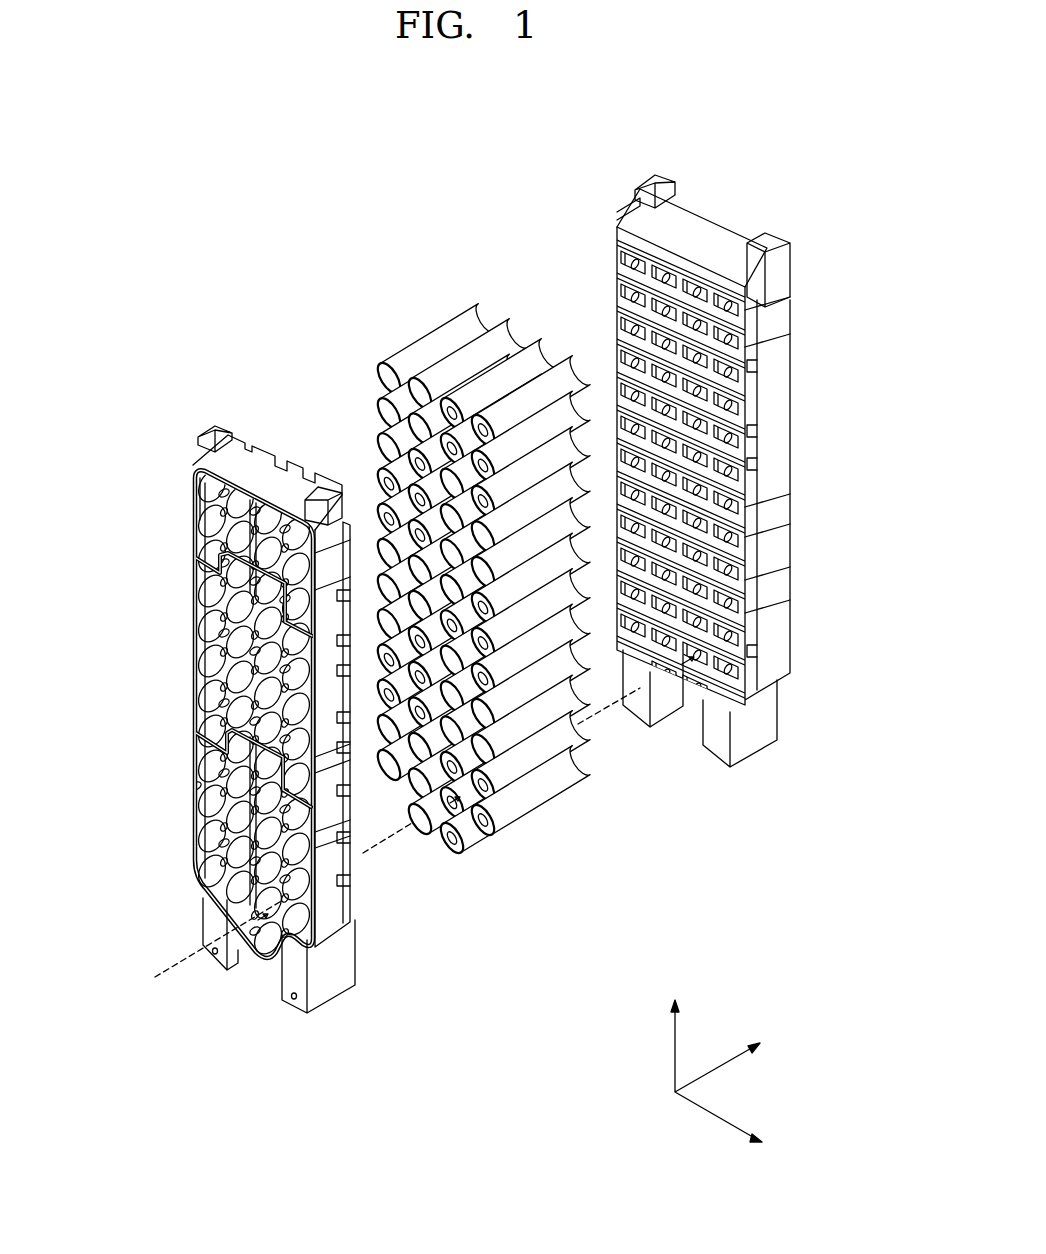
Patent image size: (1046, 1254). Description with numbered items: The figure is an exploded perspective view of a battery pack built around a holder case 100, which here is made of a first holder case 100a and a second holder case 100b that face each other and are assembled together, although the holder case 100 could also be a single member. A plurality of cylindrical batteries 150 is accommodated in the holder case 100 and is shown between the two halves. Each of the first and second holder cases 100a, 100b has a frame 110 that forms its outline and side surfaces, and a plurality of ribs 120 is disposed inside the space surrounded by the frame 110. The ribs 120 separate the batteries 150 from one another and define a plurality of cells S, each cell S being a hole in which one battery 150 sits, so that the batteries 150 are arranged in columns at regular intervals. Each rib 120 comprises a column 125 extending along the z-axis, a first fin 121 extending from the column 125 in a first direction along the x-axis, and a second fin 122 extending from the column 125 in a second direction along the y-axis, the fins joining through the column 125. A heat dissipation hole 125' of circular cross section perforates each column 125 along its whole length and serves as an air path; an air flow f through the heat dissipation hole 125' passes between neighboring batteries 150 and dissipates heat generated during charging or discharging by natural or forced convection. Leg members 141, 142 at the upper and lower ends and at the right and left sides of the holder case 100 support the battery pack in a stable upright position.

The holder case 100 is at (580, 81).
The first holder case 100a is at (645, 170).
The second holder case 100b is at (190, 415).
The frame 110 is at (275, 438).
The ribs 120 is at (118, 580).
The first fin 121 is at (207, 608).
The second fin 122 is at (207, 590).
The column 125 is at (210, 712).
The heat dissipation hole 125' is at (163, 779).
The leg member 141 is at (332, 992).
The leg member 142 is at (227, 430).
The batteries 150 is at (432, 340).
The cell S is at (205, 524).
The air flow f is at (416, 827).